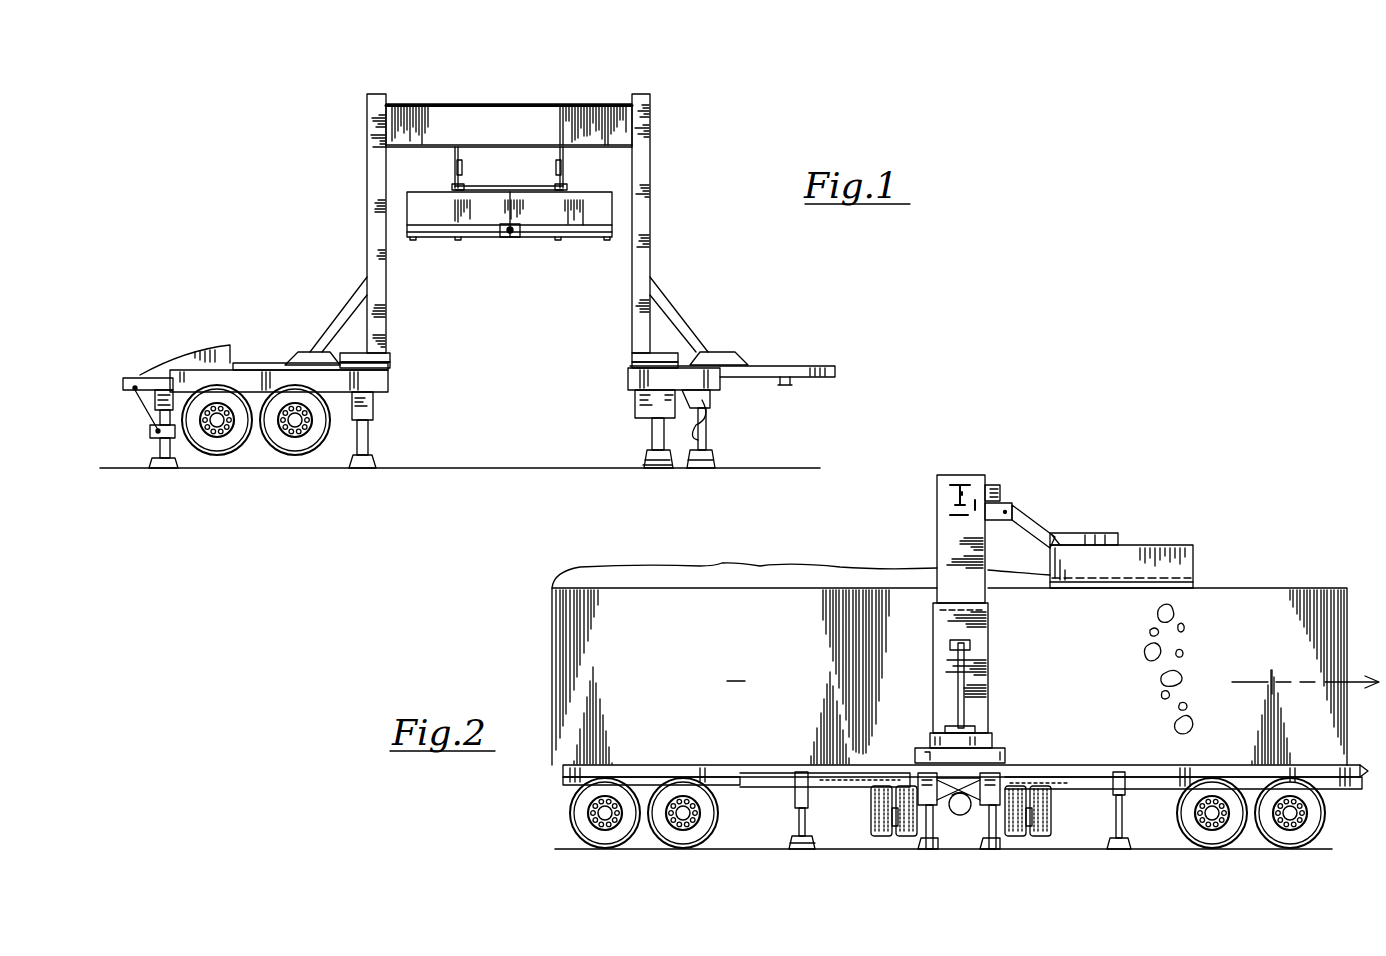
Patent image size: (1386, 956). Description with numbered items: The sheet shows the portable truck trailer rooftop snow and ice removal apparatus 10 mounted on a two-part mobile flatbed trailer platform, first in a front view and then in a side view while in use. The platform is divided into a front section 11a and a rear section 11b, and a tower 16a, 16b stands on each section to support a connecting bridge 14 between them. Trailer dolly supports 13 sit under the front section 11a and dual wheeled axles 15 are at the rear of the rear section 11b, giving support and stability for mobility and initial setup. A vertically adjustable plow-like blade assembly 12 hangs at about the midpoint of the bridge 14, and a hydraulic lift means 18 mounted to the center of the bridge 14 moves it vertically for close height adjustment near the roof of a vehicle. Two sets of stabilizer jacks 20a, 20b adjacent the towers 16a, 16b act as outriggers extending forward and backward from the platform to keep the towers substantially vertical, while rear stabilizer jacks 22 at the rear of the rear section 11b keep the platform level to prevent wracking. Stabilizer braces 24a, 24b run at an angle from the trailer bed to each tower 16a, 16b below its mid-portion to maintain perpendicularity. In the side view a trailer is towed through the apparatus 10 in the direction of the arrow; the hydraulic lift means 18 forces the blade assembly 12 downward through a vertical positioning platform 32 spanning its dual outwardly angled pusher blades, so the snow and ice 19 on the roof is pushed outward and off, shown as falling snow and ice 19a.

In FIG. 1, the portable truck trailer rooftop snow and ice removal apparatus 10 is at (683, 92).
In FIG. 1, the front section of trailer platform 11a is at (800, 366).
In FIG. 2, the front section of trailer platform 11a is at (1000, 760).
In FIG. 1, the rear section of trailer platform 11b is at (255, 368).
In FIG. 1, the blade assembly 12 is at (487, 215).
In FIG. 2, the blade assembly 12 is at (1200, 520).
In FIG. 1, the trailer dolly supports 13 is at (712, 422).
In FIG. 2, the trailer dolly supports 13 is at (985, 840).
In FIG. 1, the connecting bridge 14 is at (508, 107).
In FIG. 1, the dual wheeled axles 15 is at (290, 445).
In FIG. 2, the dual wheeled axles 15 is at (885, 825).
In FIG. 1, the tower 16a is at (648, 215).
In FIG. 2, the tower 16a is at (935, 506).
In FIG. 1, the tower 16b is at (378, 182).
In FIG. 1, the hydraulic lift means 18 is at (565, 168).
In FIG. 2, the hydraulic lift means 18 is at (1023, 508).
In FIG. 2, the snow and ice 19 is at (720, 590).
In FIG. 2, the falling snow and ice 19a is at (1168, 698).
In FIG. 1, the stabilizer jacks 20a is at (650, 438).
In FIG. 2, the stabilizer jacks 20a is at (800, 805).
In FIG. 1, the stabilizer jacks 20b is at (365, 432).
In FIG. 2, the stabilizer jacks 20b is at (1125, 825).
In FIG. 1, the rear stabilizer jacks 22 is at (150, 433).
In FIG. 1, the stabilizer brace 24a is at (680, 320).
In FIG. 2, the stabilizer brace 24a is at (965, 690).
In FIG. 1, the stabilizer brace 24b is at (348, 312).
In FIG. 2, the vertical positioning platform 32 is at (1085, 535).